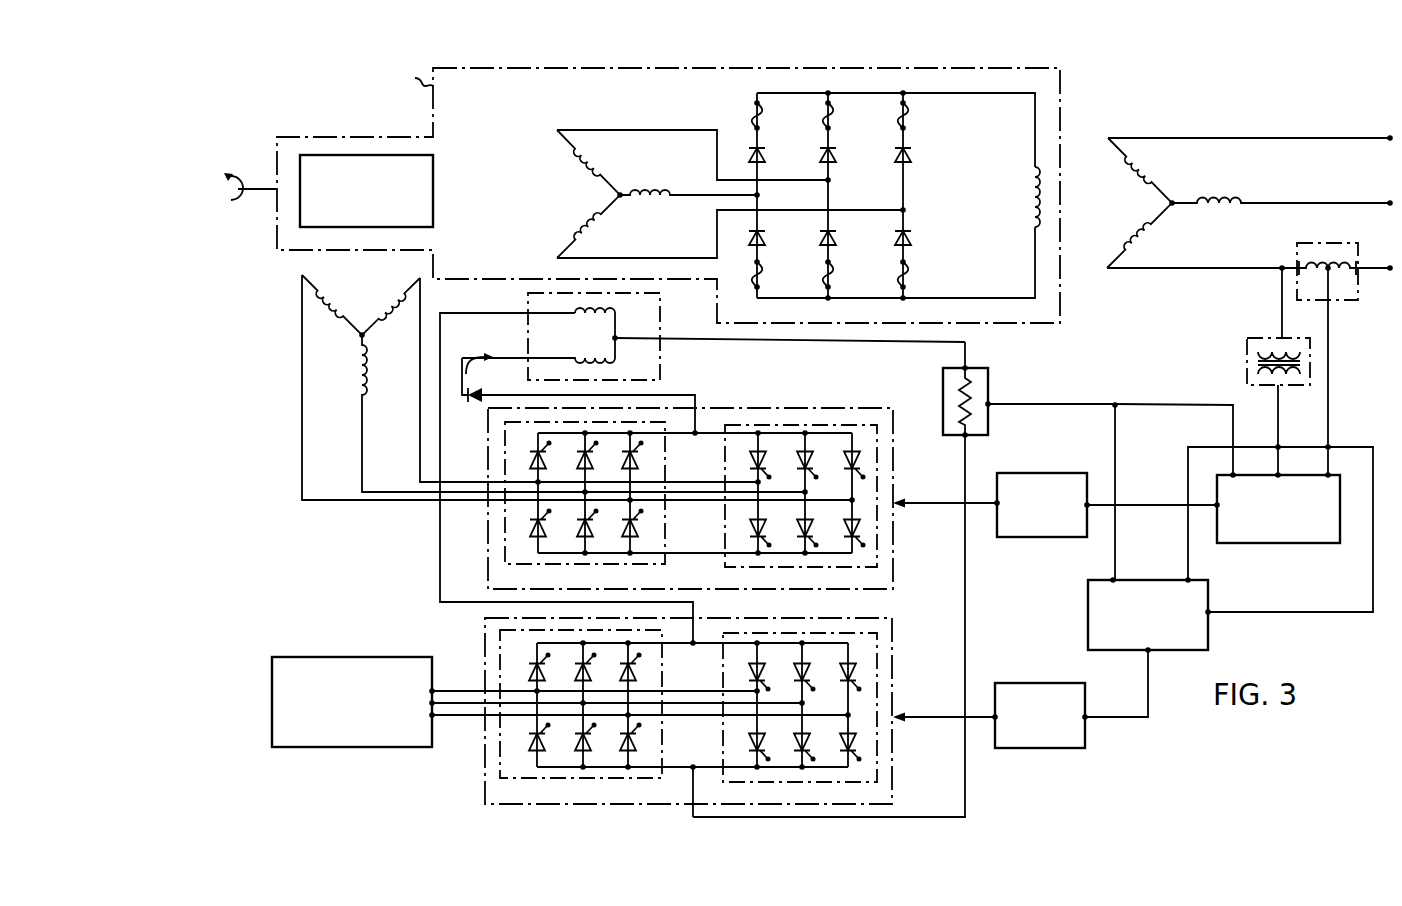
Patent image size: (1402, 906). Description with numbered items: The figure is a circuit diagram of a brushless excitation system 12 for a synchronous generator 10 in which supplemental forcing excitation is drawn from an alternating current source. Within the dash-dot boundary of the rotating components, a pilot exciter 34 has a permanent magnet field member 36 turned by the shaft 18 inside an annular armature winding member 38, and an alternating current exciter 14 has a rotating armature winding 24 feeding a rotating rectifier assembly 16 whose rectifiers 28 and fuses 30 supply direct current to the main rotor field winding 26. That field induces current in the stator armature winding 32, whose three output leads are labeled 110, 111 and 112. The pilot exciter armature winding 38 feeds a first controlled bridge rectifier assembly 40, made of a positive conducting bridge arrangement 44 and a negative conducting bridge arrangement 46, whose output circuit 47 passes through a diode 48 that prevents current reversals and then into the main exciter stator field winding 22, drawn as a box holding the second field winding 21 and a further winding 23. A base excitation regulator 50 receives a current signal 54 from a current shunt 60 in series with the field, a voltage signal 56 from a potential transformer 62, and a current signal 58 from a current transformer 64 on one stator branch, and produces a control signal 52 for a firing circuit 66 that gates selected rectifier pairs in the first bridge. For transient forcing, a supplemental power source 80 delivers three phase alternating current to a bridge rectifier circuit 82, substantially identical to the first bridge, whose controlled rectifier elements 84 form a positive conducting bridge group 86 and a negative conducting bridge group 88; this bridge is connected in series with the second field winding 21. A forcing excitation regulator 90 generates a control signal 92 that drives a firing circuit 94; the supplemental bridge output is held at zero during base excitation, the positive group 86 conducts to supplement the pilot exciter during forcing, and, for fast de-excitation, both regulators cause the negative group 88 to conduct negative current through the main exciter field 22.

The synchronous dynamoelectric machine 10 is at (1252, 217).
The brushless excitation system 12 is at (433, 126).
The alternating current exciter 14 is at (680, 194).
The rotating rectifier assembly 16 is at (881, 207).
The common shaft 18 is at (225, 189).
The second field winding 21 is at (575, 320).
The main exciter stator field winding 22 is at (702, 467).
The main exciter field winding 23 is at (575, 359).
The armature winding 24 is at (588, 222).
The main rotor field winding 26 is at (1034, 228).
The rectifiers 28 is at (765, 156).
The fuses 30 is at (762, 116).
The stator armature winding 32 is at (1136, 163).
The pilot exciter 34 is at (306, 128).
The permanent magnet field member 36 is at (432, 158).
The armature winding member 38 is at (390, 306).
The first controlled bridge rectifier assembly 40 is at (690, 486).
The positive conducting bridge arrangement 44 is at (664, 576).
The negative conducting bridge arrangement 46 is at (730, 584).
The output circuit 47 is at (694, 402).
The diode 48 is at (472, 405).
The base excitation regulator 50 is at (1336, 479).
The control signal 52 is at (1134, 505).
The current signal 54 is at (1149, 405).
The voltage signal 56 is at (1282, 298).
The current signal 58 is at (1328, 362).
The current shunt 60 is at (943, 386).
The potential transformer 62 is at (1258, 338).
The current transformer 64 is at (1345, 301).
The firing circuit 66 is at (1051, 473).
The supplemental power source 80 is at (420, 657).
The bridge rectifier circuit 82 is at (702, 706).
The controlled rectifier elements 84 is at (526, 670).
The positive conducting bridge group 86 is at (593, 715).
The negative conducting bridge group 88 is at (724, 795).
The forcing excitation regulator 90 is at (1208, 585).
The control signal 92 is at (1148, 703).
The firing circuit 94 is at (1052, 683).
The generator output terminal 110 is at (1314, 138).
The generator output terminal 111 is at (1314, 202).
The generator output terminal 112 is at (1364, 268).